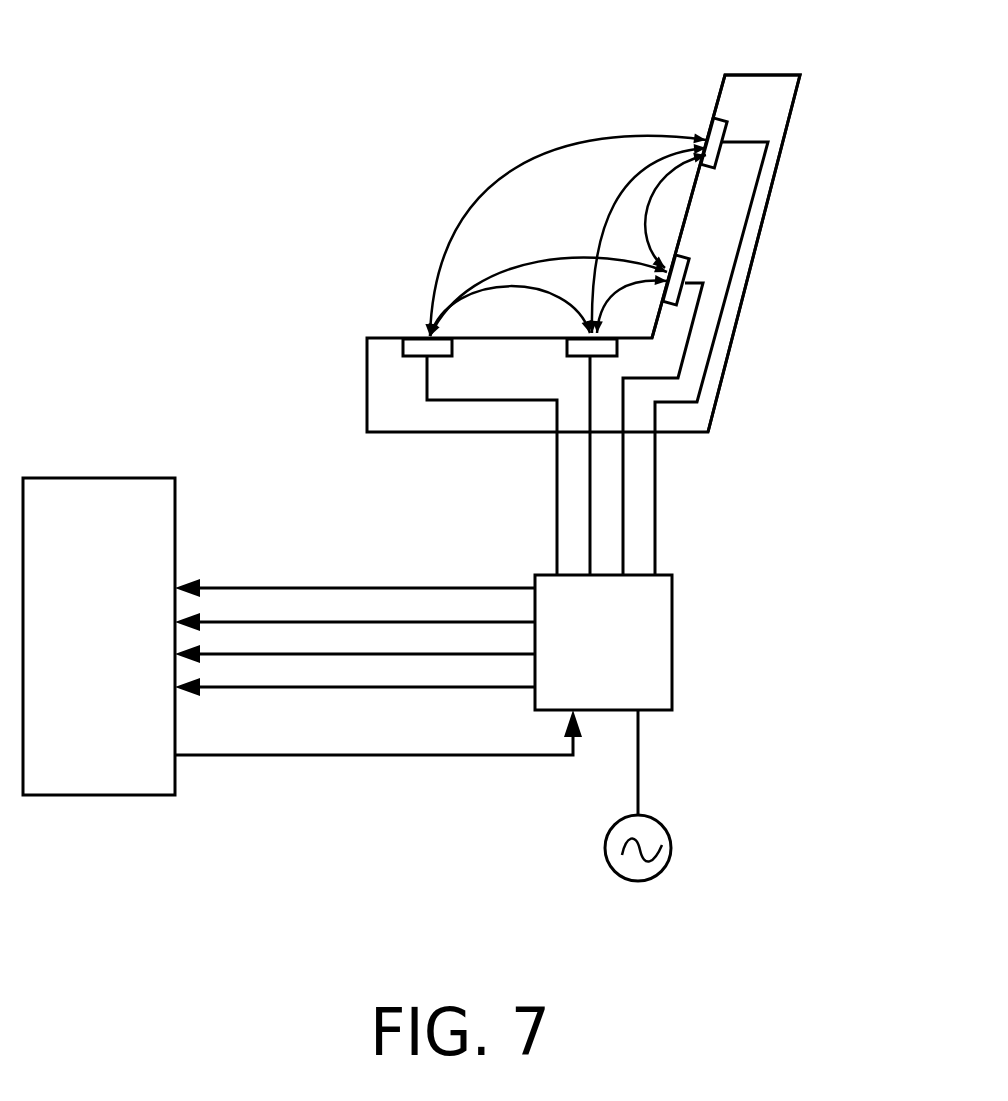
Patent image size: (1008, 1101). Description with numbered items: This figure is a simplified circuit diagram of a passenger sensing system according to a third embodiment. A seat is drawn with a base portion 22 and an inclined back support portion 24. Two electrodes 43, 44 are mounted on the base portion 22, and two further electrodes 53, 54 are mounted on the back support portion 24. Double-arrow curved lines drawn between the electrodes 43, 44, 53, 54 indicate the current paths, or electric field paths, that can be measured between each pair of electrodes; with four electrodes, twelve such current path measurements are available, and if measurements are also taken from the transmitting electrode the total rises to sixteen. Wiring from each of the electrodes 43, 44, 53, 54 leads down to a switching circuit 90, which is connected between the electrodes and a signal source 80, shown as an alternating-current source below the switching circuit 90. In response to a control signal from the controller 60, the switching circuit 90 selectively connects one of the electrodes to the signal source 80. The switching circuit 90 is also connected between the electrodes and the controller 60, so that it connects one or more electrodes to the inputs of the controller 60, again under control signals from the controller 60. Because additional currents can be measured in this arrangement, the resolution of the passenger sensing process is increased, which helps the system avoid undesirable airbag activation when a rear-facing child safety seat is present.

The base portion 22 is at (683, 432).
The back support portion 24 is at (768, 205).
The electrode 43 is at (407, 356).
The electrode 44 is at (580, 356).
The electrode 53 is at (690, 262).
The electrode 54 is at (722, 136).
The controller 60 is at (121, 620).
The signal source 80 is at (645, 880).
The switching circuit 90 is at (624, 649).